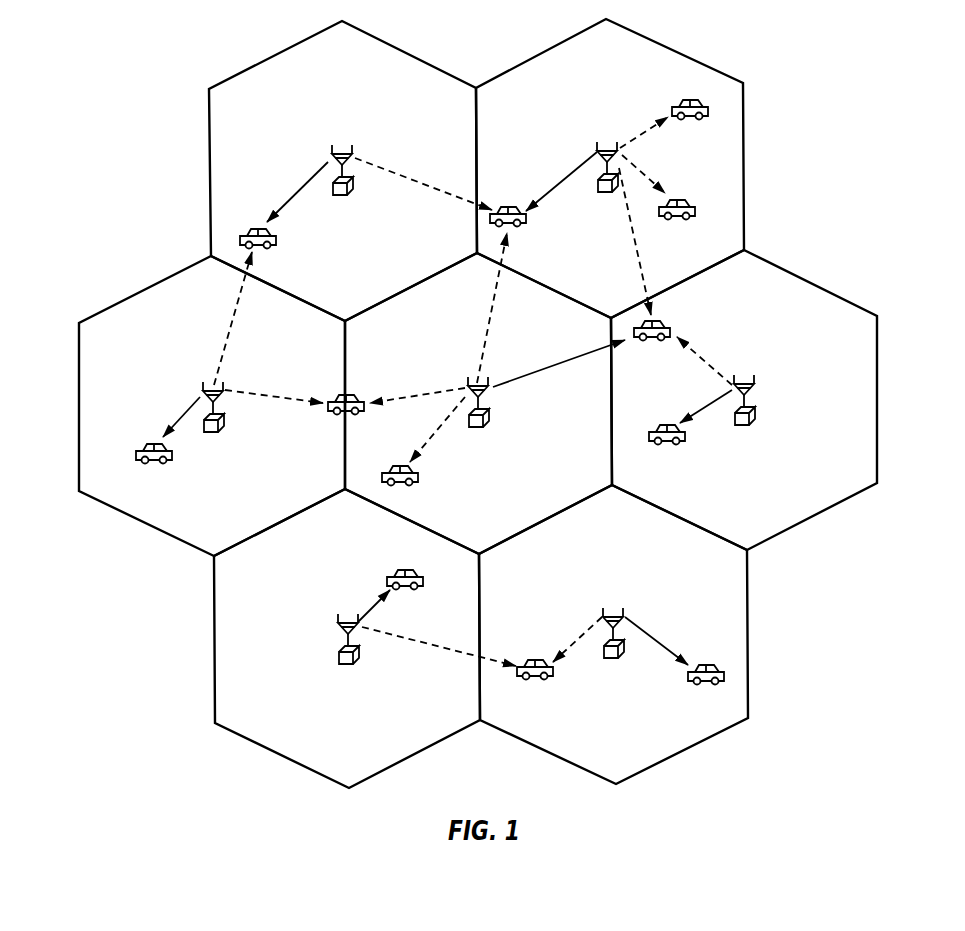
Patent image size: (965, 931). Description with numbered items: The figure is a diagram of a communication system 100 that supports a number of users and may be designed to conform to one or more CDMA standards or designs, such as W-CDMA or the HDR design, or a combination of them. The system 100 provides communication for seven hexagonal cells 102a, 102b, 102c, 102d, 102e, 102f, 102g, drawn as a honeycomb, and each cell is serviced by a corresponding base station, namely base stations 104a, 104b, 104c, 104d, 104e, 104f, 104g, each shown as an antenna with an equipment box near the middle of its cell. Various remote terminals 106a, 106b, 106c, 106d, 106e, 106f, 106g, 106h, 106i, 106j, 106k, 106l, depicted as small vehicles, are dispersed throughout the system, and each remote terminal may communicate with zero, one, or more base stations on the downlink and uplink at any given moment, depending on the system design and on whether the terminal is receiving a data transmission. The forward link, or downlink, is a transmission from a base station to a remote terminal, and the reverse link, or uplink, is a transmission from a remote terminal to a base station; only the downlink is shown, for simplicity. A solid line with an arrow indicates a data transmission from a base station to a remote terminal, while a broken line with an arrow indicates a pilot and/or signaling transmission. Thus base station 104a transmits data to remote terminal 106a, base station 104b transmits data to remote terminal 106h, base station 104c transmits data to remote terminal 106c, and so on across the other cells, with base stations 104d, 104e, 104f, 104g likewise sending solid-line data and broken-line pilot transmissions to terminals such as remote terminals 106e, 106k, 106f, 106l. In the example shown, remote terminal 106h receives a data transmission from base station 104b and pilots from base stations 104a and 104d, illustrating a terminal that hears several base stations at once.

The communication system 100 is at (885, 108).
The cell 102a is at (277, 54).
The cell 102b is at (687, 39).
The cell 102c is at (145, 289).
The cell 102d is at (490, 294).
The cell 102e is at (813, 279).
The cell 102f is at (214, 645).
The cell 102g is at (750, 640).
The base station 104a is at (345, 152).
The base station 104b is at (609, 152).
The base station 104c is at (201, 392).
The base station 104d is at (491, 396).
The base station 104e is at (752, 374).
The base station 104f is at (351, 621).
The base station 104g is at (615, 617).
The remote terminal 106a is at (278, 240).
The remote terminal 106b is at (692, 197).
The remote terminal 106c is at (151, 443).
The remote terminal 106d is at (348, 397).
The remote terminal 106e is at (664, 324).
The remote terminal 106f is at (402, 570).
The remote terminal 106g is at (532, 660).
The remote terminal 106h is at (517, 197).
The remote terminal 106i is at (688, 100).
The remote terminal 106j is at (393, 466).
The remote terminal 106k is at (662, 425).
The remote terminal 106l is at (706, 665).